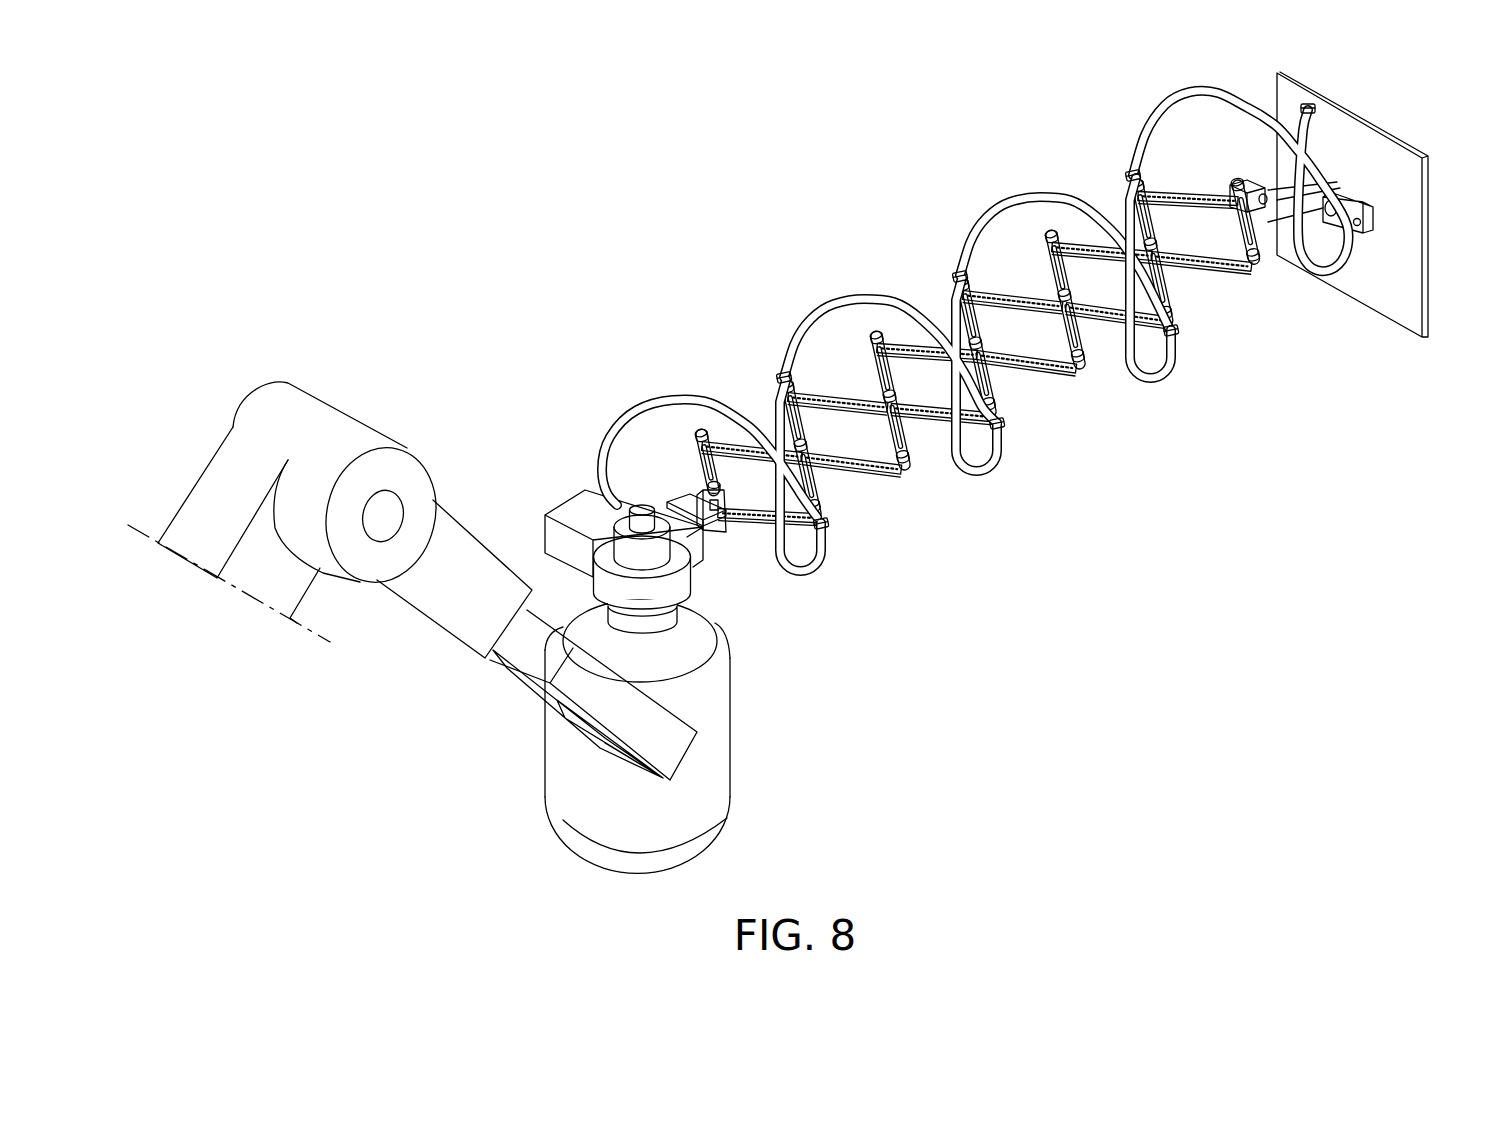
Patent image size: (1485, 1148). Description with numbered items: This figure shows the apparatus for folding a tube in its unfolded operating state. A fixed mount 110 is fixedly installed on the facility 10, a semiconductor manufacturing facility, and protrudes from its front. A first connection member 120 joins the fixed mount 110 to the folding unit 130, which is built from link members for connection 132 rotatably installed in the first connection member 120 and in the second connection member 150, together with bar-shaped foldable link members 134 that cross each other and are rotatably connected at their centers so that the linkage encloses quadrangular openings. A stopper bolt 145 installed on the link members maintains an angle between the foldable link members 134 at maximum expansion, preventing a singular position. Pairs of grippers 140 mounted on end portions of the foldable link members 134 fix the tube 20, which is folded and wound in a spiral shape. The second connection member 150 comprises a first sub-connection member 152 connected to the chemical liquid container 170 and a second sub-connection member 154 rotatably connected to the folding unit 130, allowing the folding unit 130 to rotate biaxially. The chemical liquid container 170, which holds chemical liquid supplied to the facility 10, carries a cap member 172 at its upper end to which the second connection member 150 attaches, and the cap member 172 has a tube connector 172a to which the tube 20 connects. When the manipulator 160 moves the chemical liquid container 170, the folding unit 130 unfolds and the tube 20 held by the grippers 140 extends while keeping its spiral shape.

The facility 10 is at (1418, 147).
The tube 20 is at (1163, 367).
The fixed mount 110 is at (1353, 197).
The first connection member 120 is at (1262, 190).
The folding unit 130 is at (977, 417).
The link member for connection 132 is at (893, 457).
The foldable link member 134 is at (890, 430).
The pair of grippers 140 is at (975, 331).
The stopper bolt 145 is at (722, 486).
The second connection member 150 is at (750, 595).
The 2-1 connection member 152 is at (715, 532).
The 2-2 connection member 154 is at (768, 516).
The manipulator 160 is at (347, 420).
The chemical liquid container 170 is at (713, 777).
The cap member 172 is at (585, 509).
The tube connector 172a is at (615, 507).